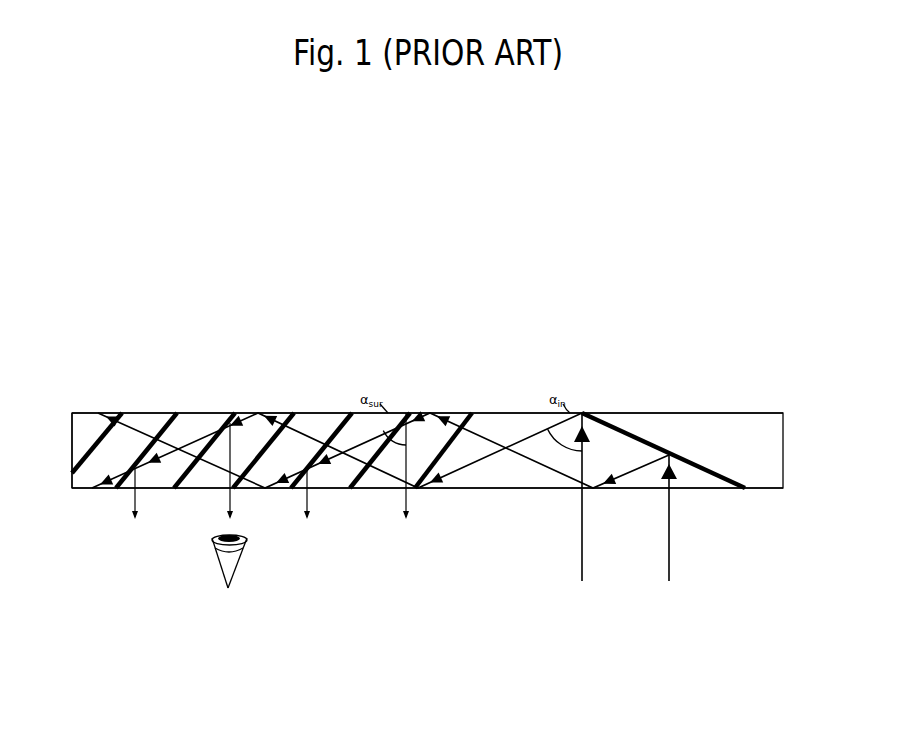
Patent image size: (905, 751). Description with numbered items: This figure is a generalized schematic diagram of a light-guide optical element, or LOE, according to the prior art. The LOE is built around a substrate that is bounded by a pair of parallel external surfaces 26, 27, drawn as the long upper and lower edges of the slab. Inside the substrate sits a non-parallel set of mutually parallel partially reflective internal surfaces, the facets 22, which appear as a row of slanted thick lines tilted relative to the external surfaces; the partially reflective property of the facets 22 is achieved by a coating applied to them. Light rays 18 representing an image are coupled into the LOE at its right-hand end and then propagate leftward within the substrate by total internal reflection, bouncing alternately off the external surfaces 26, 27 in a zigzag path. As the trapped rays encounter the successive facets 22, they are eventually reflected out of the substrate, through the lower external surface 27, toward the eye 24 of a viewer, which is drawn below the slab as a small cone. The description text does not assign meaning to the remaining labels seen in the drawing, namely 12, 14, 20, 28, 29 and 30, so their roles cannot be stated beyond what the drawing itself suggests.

The light source / input light rays 12 is at (625, 497).
The optical light-guide device 14 is at (437, 454).
The light rays 18 is at (663, 439).
The light-transmitting substrate 20 is at (427, 450).
The partially reflective internal surfaces 22 is at (102, 438).
The eye 24 is at (237, 570).
The external surface 26 is at (625, 413).
The external surface 27 is at (545, 490).
The light ray trapped in substrate 28 is at (423, 413).
The edge of substrate 29 is at (73, 452).
The light ray propagating in substrate 30 is at (482, 468).